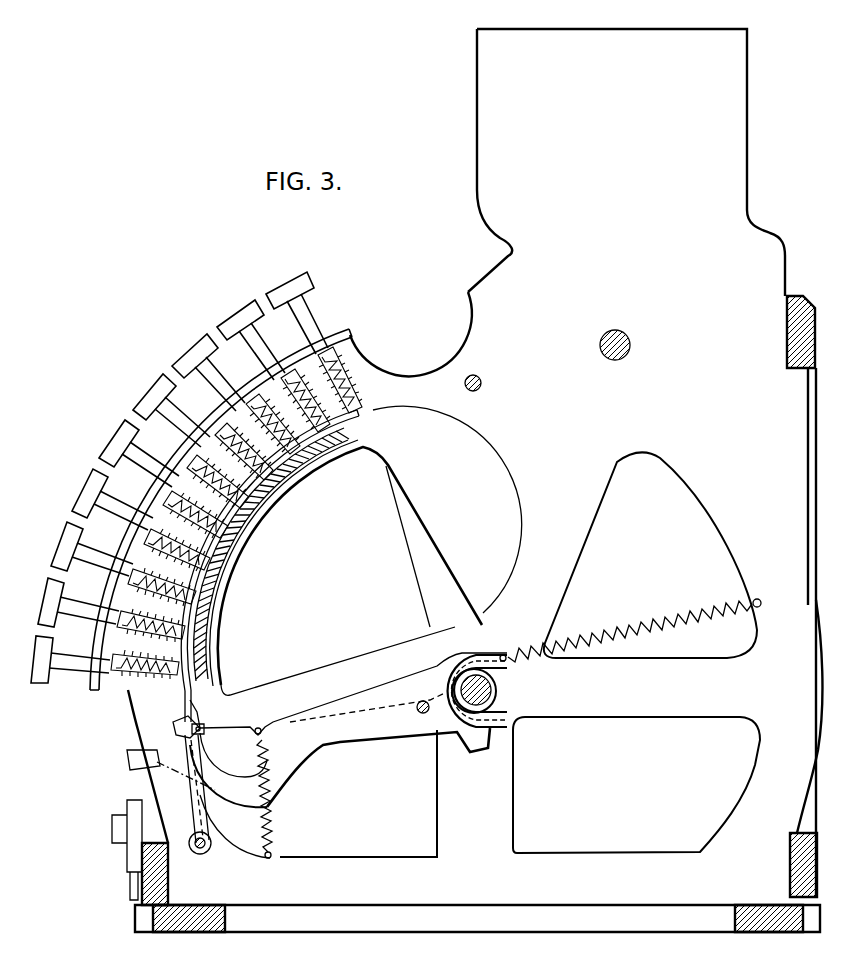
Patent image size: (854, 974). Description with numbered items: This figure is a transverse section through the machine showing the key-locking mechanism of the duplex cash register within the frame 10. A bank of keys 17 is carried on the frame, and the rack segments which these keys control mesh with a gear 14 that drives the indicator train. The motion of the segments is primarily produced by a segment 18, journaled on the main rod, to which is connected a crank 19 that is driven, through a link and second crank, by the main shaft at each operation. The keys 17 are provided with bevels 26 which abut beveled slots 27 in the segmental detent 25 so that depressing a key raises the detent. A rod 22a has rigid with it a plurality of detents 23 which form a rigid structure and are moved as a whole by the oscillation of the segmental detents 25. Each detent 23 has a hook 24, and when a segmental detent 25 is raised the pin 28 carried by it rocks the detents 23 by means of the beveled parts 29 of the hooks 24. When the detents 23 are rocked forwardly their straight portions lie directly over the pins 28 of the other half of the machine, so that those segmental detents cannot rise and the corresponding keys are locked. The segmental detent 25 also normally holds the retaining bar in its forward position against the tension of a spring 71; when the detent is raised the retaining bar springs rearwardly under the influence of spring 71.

The frame 10 is at (298, 778).
The gear 14 is at (492, 690).
The keys 17 is at (270, 297).
The segment 18 is at (128, 800).
The crank 19 is at (130, 752).
The rod 22a is at (203, 850).
The detents 23 is at (197, 780).
The hooks 24 is at (184, 721).
The segmental detent 25 is at (410, 458).
The bevels 26 is at (362, 408).
The beveled slots 27 is at (352, 436).
The pins 28 is at (208, 724).
The beveled parts 29 is at (205, 728).
The spring 71 is at (640, 626).